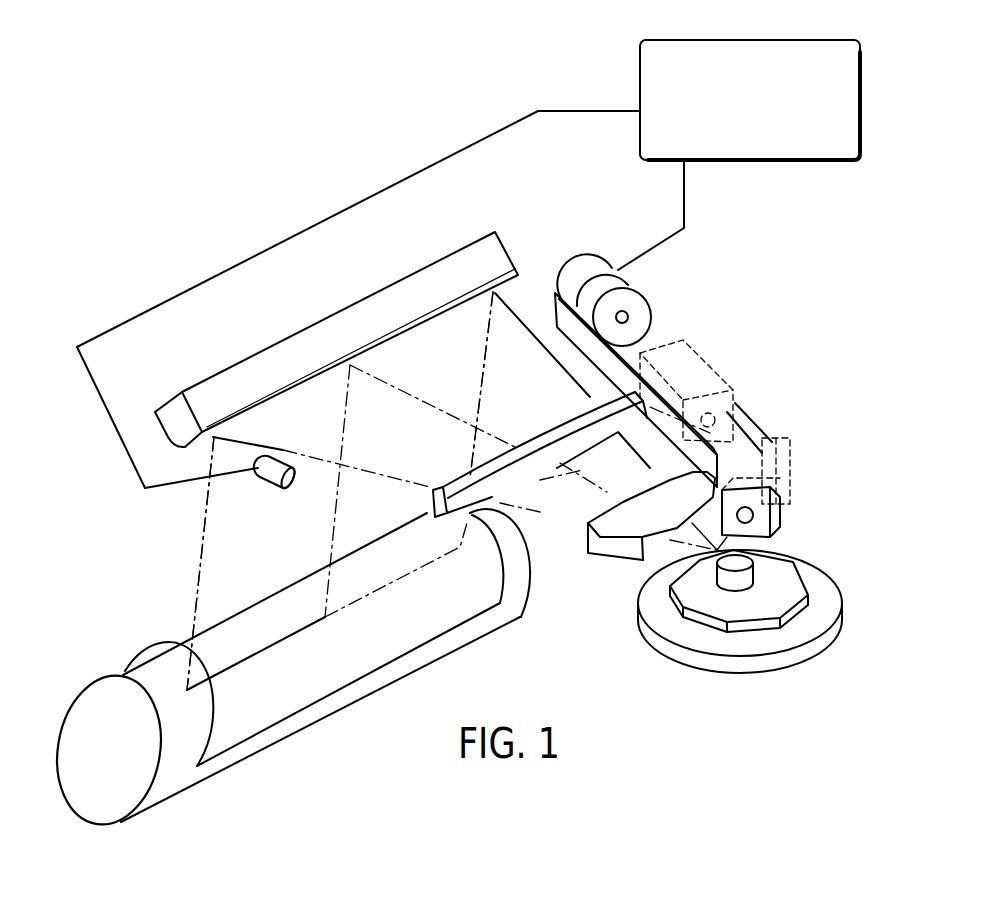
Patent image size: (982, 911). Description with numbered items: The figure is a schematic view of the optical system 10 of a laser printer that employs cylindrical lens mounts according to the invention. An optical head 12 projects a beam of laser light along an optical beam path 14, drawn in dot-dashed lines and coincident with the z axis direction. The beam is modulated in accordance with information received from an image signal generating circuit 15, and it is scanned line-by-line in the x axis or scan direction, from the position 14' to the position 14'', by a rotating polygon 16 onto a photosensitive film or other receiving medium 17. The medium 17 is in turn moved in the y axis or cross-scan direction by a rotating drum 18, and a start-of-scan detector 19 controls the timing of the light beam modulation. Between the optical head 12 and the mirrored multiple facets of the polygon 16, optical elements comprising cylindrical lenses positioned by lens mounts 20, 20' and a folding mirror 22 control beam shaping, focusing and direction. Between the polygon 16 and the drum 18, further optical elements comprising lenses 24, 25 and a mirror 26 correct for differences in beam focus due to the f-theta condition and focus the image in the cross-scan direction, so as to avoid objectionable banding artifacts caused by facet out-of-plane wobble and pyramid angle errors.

The optical system 10 is at (252, 208).
The optical head 12 is at (593, 263).
The optical beam path 14 is at (505, 491).
The scan start position of beam 14' is at (173, 563).
The scan end position of beam 14'' is at (460, 385).
The image signal generating circuit 15 is at (784, 38).
The rotating polygon 16 is at (755, 600).
The receiving medium 17 is at (163, 660).
The rotating drum 18 is at (187, 778).
The start-of-scan detector 19 is at (262, 488).
The lens mount 20 is at (792, 507).
The lens mount 20' is at (718, 389).
The folding mirror 22 is at (793, 452).
The lens 24 is at (625, 553).
The lens 25 is at (470, 477).
The mirror 26 is at (218, 378).